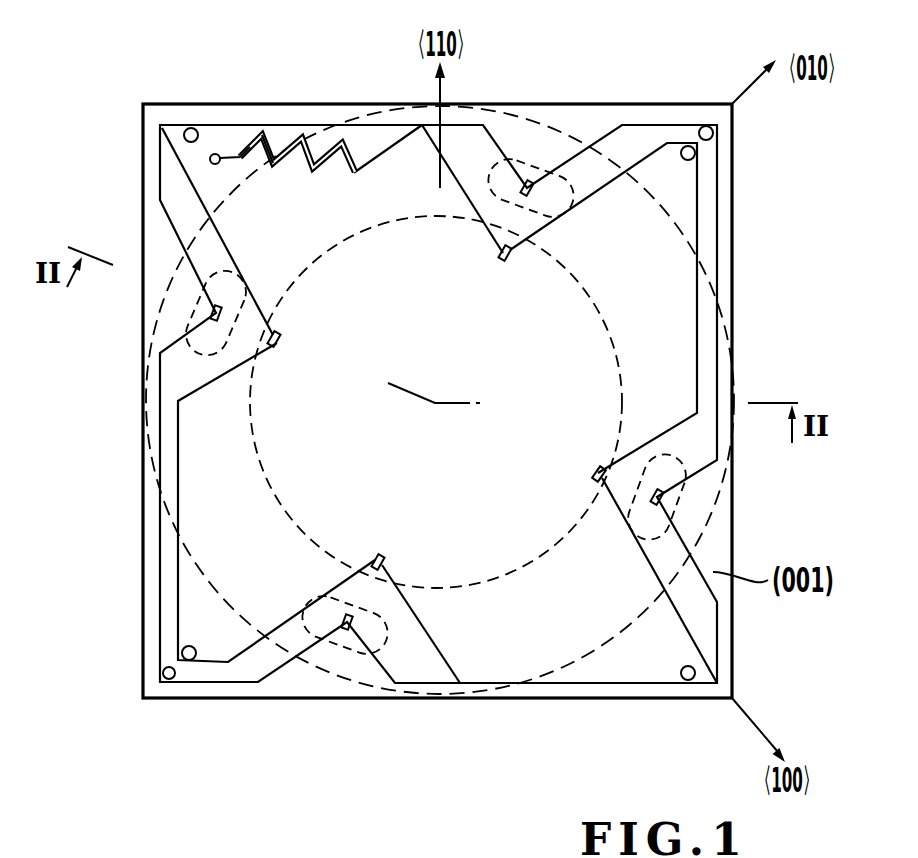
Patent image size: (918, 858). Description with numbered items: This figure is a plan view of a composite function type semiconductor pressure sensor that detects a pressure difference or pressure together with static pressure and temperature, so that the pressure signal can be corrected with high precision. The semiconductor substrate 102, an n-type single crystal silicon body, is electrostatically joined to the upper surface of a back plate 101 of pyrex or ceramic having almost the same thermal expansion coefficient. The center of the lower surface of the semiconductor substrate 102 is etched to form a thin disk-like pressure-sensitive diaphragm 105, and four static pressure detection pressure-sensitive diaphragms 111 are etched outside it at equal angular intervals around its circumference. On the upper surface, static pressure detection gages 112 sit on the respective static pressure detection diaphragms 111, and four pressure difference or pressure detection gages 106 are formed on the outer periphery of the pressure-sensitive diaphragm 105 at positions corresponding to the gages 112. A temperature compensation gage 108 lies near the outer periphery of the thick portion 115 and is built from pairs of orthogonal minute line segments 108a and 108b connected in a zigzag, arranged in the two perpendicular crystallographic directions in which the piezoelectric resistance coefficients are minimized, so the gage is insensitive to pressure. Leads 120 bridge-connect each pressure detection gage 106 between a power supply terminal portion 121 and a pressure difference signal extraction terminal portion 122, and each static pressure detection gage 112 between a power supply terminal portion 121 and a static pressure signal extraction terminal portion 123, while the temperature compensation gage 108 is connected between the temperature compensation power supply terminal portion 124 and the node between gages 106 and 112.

The back plate 101 is at (703, 527).
The semiconductor substrate 102 is at (747, 324).
The pressure-sensitive diaphragm 105 is at (498, 590).
The pressure difference or pressure detection gage 106 is at (506, 262).
The temperature compensation gage 108 is at (318, 140).
The minute line segment 108a is at (240, 148).
The minute line segment 108b is at (274, 145).
The static pressure detection pressure-sensitive diaphragm 111 is at (435, 465).
The static pressure detection gage 112 is at (527, 182).
The thick portion 115 is at (628, 657).
The lead 120 is at (697, 240).
The pressure difference/static pressure detection power supply terminal portion 121 is at (192, 128).
The pressure difference signal extraction terminal portion 122 is at (696, 153).
The static pressure signal extraction terminal portion 123 is at (703, 125).
The temperature compensation power supply terminal portion 124 is at (210, 158).